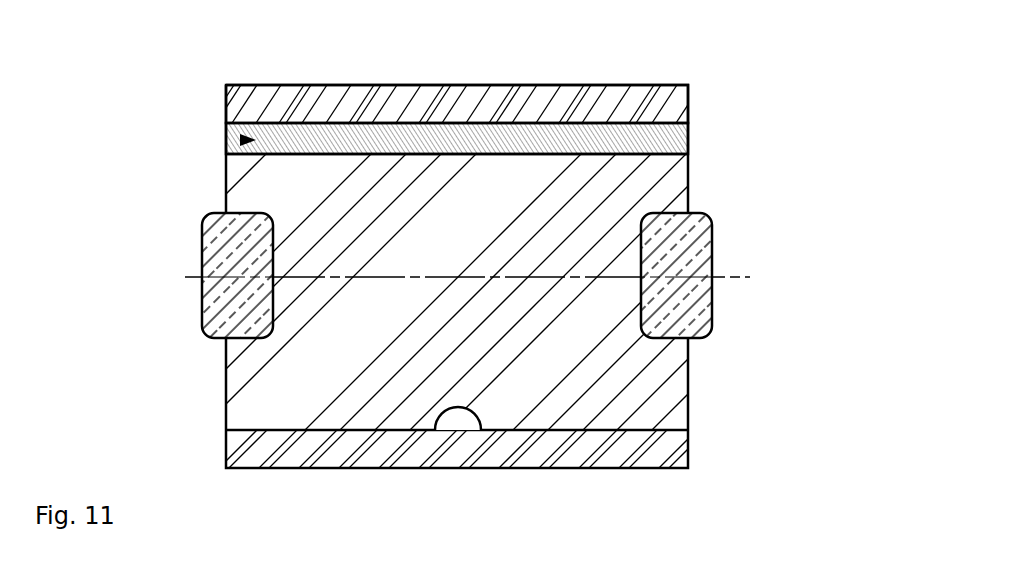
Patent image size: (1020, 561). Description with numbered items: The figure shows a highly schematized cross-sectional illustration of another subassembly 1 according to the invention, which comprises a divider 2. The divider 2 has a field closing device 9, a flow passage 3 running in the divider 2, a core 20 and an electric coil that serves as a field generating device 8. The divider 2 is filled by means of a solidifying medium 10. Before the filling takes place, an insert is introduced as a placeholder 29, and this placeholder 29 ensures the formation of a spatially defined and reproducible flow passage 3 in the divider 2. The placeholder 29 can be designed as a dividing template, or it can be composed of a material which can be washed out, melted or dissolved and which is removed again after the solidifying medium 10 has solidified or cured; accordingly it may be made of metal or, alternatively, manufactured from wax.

The subassembly 1 is at (720, 51).
The divider 2 is at (385, 83).
The flow passage 3 is at (227, 134).
The field generating device 8 is at (218, 253).
The field closing device 9 is at (243, 102).
The solidifying medium 10 is at (457, 420).
The core 20 is at (258, 186).
The placeholder 29 is at (663, 137).